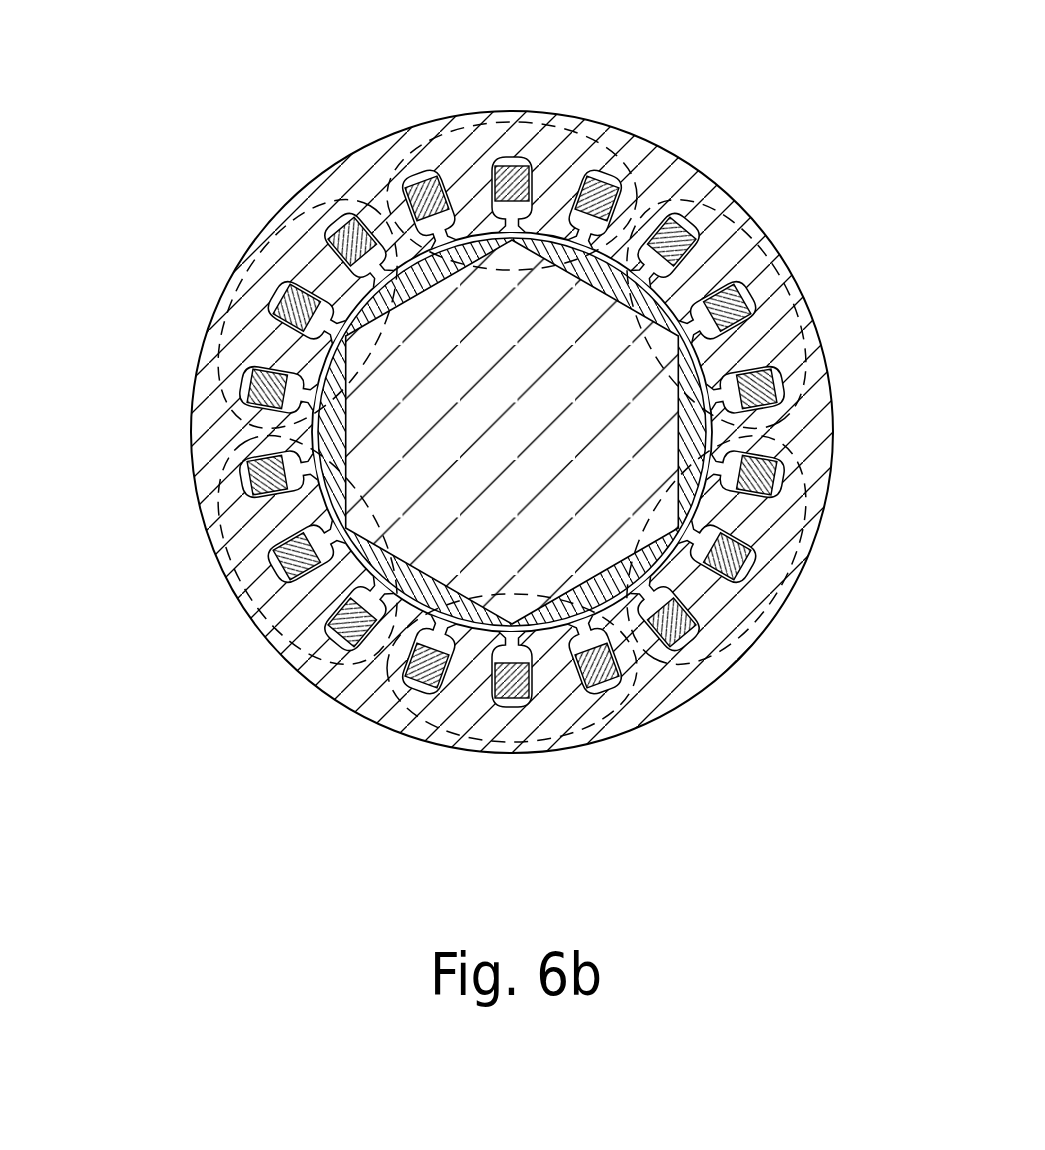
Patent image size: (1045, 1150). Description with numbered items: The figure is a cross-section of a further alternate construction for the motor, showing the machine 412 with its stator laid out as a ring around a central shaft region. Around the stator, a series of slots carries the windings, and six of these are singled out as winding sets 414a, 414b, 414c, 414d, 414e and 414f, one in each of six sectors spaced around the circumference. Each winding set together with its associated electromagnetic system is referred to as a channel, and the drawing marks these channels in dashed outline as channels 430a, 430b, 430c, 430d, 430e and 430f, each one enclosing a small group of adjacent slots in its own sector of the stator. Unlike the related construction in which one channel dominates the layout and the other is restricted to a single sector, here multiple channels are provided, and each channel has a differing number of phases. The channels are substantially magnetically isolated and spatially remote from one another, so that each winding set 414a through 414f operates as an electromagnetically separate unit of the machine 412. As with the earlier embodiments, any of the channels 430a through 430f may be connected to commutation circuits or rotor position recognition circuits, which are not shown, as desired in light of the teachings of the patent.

The machine 412 is at (190, 850).
The winding set 414a is at (283, 312).
The winding set 414b is at (257, 474).
The winding set 414c is at (524, 690).
The winding set 414d is at (677, 627).
The winding set 414e is at (687, 237).
The winding set 414f is at (410, 187).
The channel 430a is at (205, 360).
The channel 430b is at (245, 632).
The channel 430c is at (438, 745).
The channel 430d is at (780, 640).
The channel 430e is at (800, 280).
The channel 430f is at (485, 120).